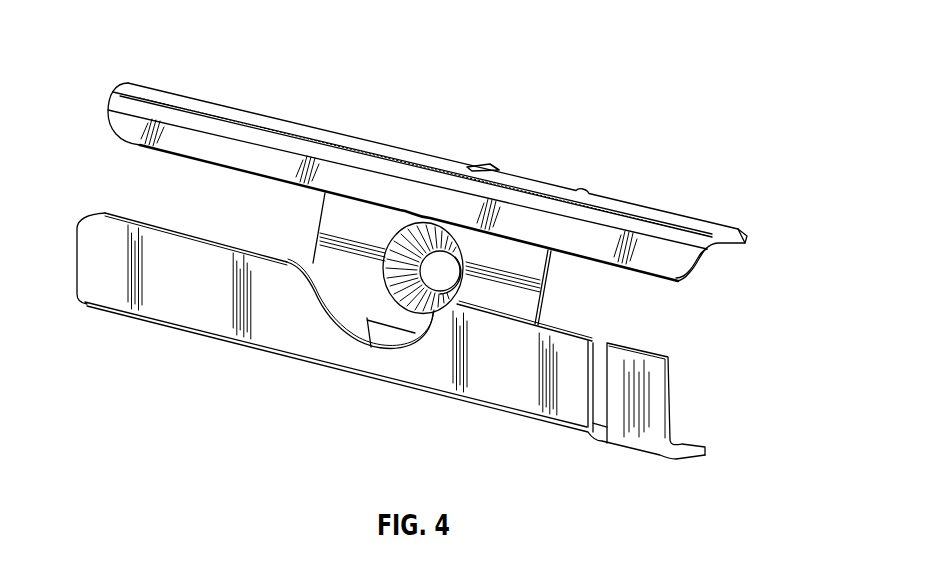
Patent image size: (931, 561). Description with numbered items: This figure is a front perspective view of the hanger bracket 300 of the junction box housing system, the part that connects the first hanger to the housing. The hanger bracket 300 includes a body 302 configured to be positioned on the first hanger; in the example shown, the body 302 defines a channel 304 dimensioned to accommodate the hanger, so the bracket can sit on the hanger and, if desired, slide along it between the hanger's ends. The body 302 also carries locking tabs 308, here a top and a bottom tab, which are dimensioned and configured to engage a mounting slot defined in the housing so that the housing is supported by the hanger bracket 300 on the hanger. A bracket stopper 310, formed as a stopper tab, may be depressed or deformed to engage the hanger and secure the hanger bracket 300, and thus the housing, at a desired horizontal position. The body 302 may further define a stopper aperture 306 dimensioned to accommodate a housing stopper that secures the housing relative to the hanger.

The hanger bracket 300 is at (624, 57).
The body 302 is at (421, 163).
The channel 304 is at (704, 303).
The stopper aperture 306 is at (400, 230).
The locking tab 308 is at (488, 163).
The bracket stopper 310 is at (653, 380).